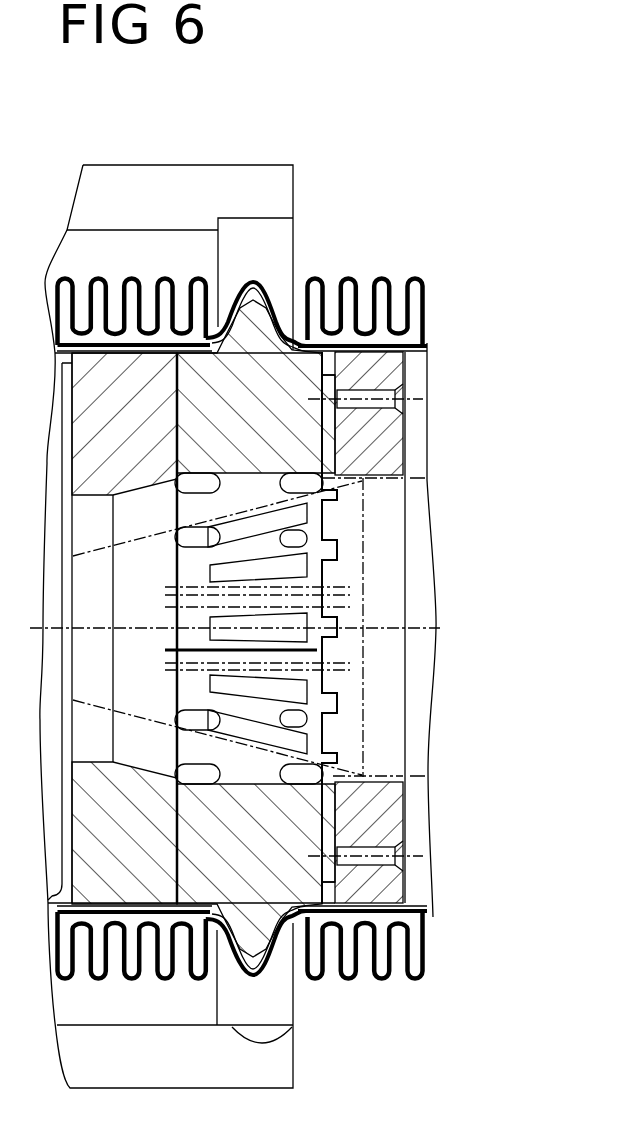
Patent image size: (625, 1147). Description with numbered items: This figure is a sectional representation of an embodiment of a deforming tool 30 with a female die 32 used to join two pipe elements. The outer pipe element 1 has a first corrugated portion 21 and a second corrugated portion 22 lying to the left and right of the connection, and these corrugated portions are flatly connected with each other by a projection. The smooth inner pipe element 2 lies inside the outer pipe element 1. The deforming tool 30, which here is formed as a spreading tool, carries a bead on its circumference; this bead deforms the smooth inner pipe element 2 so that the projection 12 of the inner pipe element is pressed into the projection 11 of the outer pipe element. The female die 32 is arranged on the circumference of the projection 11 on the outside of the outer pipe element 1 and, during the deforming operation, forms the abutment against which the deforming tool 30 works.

The outer pipe element 1 is at (425, 303).
The inner pipe element 2 is at (417, 343).
The projection of outer pipe element 11 is at (262, 283).
The projection of inner pipe element 12 is at (280, 323).
The first corrugated portion 21 is at (130, 277).
The second corrugated portion 22 is at (392, 265).
The deforming tool 30 is at (335, 757).
The female die 32 is at (268, 238).